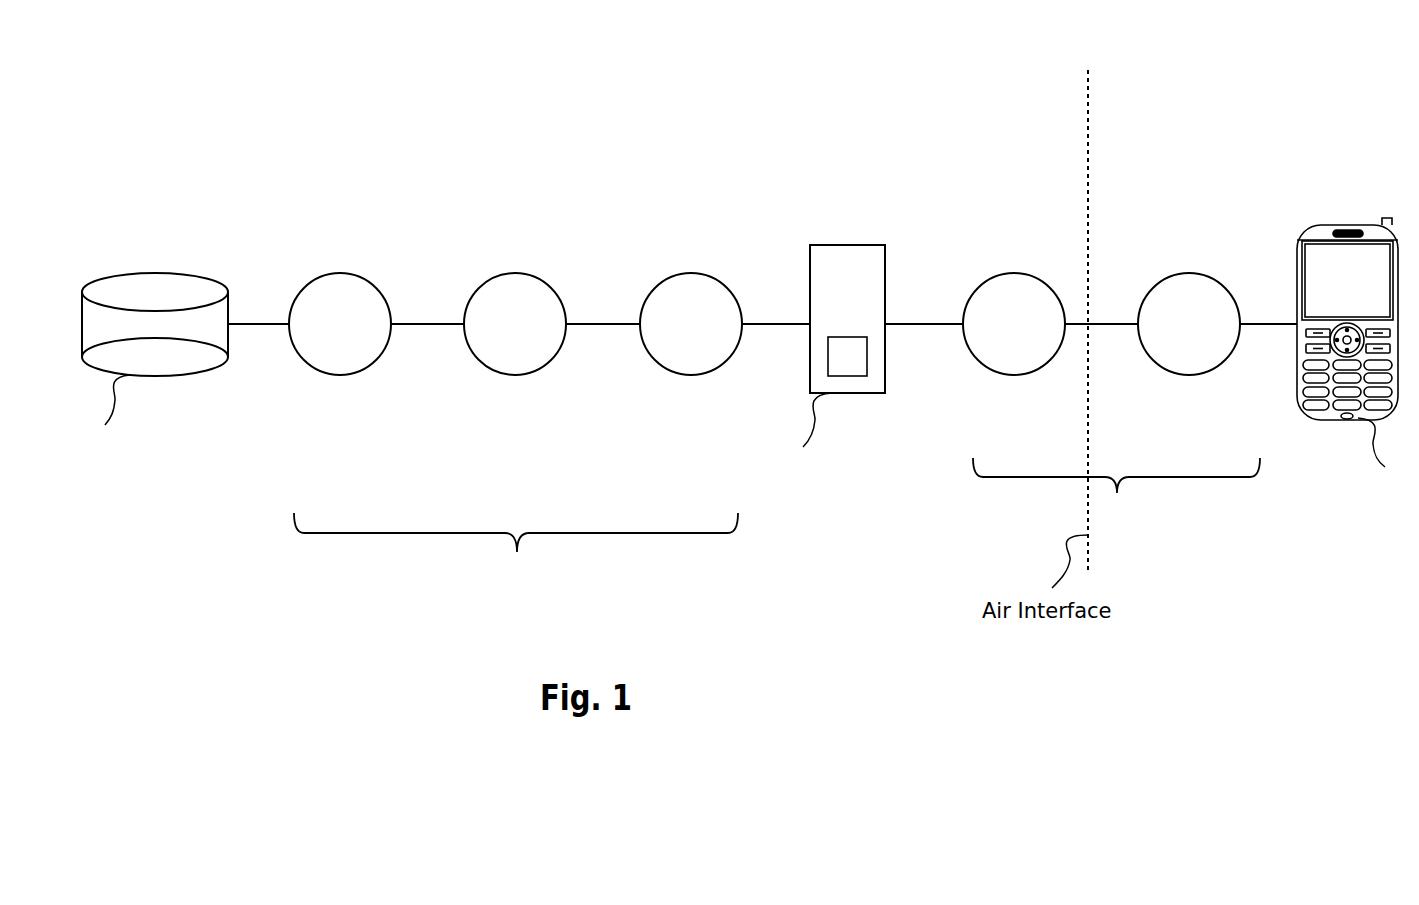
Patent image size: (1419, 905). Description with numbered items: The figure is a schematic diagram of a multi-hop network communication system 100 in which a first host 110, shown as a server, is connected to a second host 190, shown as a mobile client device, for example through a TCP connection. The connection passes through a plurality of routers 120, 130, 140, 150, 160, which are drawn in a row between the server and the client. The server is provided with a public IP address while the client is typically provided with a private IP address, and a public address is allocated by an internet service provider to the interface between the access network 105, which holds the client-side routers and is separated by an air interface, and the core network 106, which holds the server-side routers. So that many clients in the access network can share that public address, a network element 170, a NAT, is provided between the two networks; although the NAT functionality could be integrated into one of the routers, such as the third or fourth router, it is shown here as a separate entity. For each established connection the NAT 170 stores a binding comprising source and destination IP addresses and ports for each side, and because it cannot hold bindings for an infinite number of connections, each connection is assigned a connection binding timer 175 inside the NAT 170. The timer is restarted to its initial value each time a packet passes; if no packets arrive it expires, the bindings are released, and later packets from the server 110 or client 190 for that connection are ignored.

The multi-hop network communication system 100 is at (521, 62).
The access network 105 is at (1116, 491).
The core network 106 is at (516, 551).
The first host 110 is at (195, 375).
The router R1 120 is at (347, 376).
The router R2 130 is at (525, 376).
The router R3 140 is at (698, 375).
The router R4 150 is at (1008, 375).
The router R5 160 is at (1192, 375).
The network element (NAT) 170 is at (888, 393).
The connection binding timer 175 is at (867, 355).
The second host 190 is at (1340, 420).